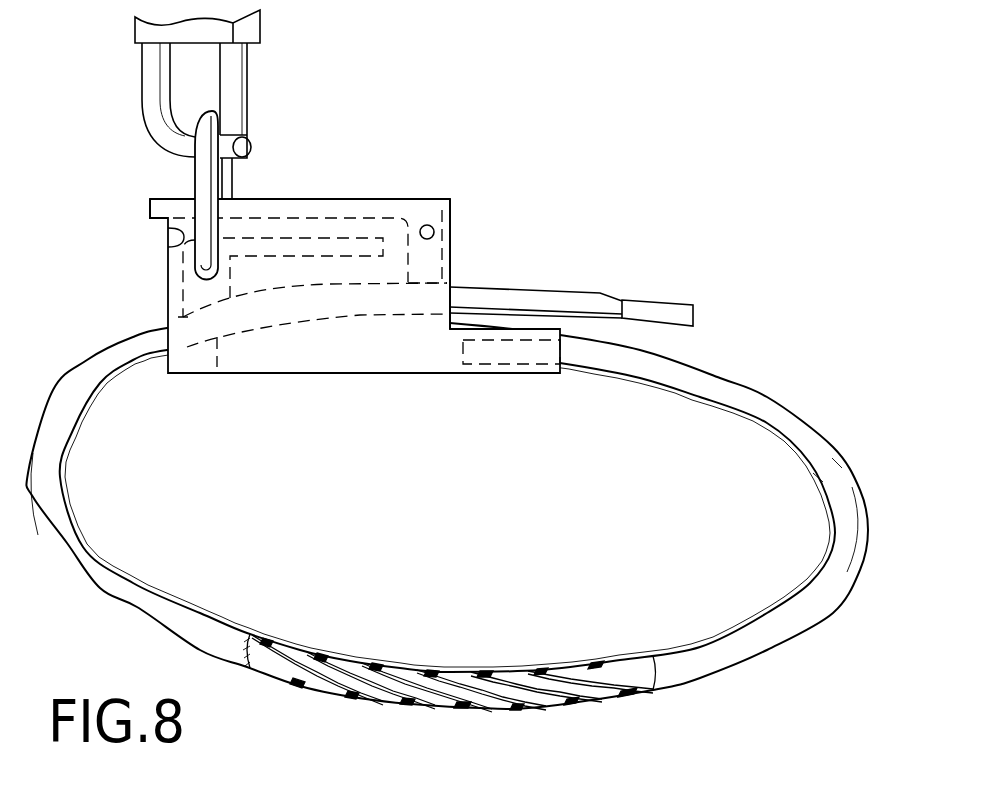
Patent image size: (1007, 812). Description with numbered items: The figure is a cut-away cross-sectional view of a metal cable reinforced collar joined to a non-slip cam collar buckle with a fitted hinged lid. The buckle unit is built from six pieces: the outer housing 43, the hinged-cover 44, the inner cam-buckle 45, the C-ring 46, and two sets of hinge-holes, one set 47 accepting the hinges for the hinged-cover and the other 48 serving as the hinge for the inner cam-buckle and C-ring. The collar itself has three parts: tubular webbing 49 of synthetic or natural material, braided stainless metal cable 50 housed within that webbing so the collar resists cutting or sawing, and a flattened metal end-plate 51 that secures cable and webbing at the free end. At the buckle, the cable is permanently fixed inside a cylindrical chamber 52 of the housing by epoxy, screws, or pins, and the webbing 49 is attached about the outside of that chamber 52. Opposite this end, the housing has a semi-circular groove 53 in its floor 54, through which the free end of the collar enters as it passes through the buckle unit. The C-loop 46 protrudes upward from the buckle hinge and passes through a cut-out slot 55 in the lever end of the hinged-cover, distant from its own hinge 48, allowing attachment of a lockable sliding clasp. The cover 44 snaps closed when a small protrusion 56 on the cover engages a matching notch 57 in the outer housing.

The outer housing 43 is at (452, 266).
The hinged-cover 44 is at (412, 197).
The inner cam-buckle 45 is at (330, 250).
The C-ring 46 is at (218, 123).
The hinge-holes for the hinged-cover 47 is at (434, 229).
The hinge for the inner cam-buckle and C-ring 48 is at (196, 268).
The tubular webbing 49 is at (500, 670).
The braided stainless metal cable 50 is at (363, 680).
The flattened metal end-plate 51 is at (678, 310).
The cylindrical chamber 52 is at (530, 376).
The semi-circular groove 53 is at (217, 340).
The floor 54 is at (353, 377).
The cut-out slot 55 is at (221, 198).
The protrusion 56 is at (153, 225).
The notch 57 is at (170, 246).